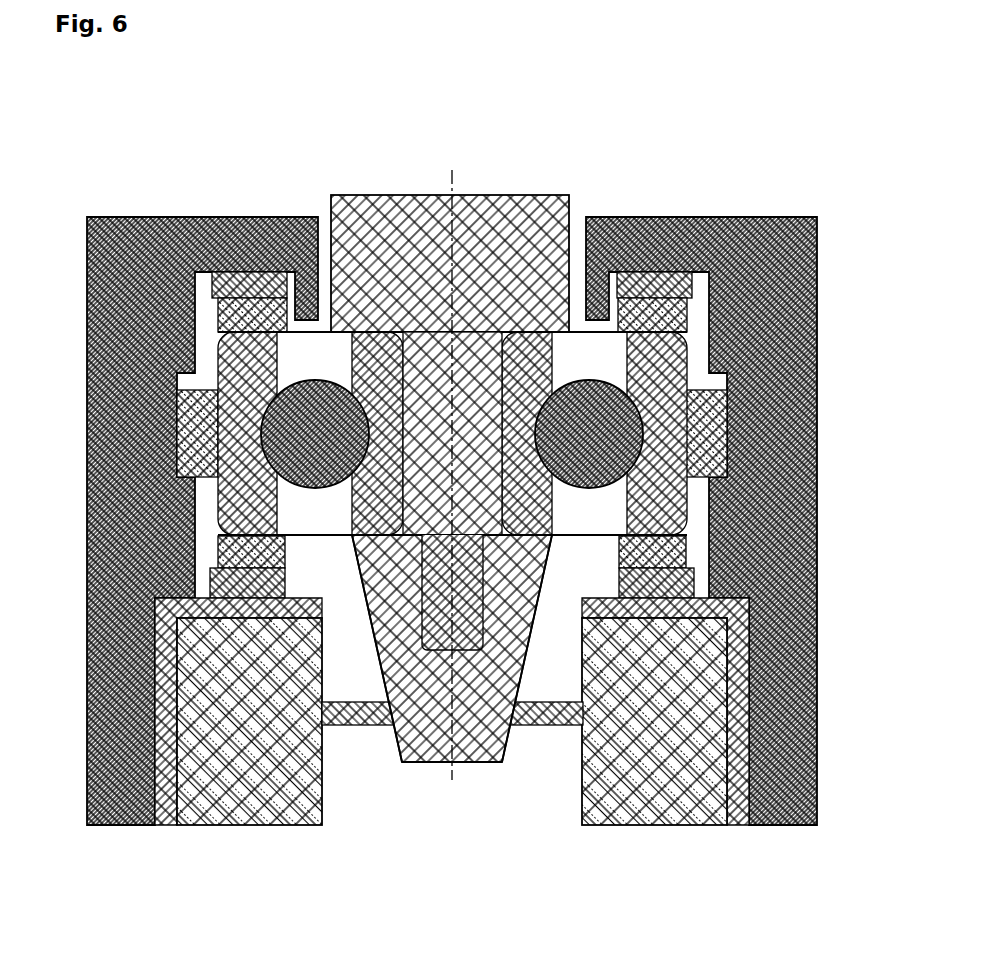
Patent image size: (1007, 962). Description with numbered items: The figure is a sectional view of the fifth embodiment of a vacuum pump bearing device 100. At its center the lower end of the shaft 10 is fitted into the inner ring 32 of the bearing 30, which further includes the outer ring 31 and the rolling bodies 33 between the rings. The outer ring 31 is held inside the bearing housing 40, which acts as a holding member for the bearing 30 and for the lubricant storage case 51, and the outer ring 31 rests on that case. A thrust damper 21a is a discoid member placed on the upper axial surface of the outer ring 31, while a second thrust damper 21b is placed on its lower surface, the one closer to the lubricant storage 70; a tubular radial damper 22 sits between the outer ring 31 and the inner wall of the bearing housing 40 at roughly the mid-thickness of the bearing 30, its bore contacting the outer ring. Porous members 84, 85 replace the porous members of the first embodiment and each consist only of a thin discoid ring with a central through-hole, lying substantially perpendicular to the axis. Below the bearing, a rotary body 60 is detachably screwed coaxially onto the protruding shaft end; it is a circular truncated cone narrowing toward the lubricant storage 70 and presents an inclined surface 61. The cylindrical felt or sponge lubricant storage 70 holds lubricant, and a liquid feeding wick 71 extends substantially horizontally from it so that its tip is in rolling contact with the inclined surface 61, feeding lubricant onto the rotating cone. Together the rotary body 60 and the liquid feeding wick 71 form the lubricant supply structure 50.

The vacuum pump bearing device 100 is at (735, 115).
The shaft 10 is at (513, 238).
The thrust damper 21a is at (247, 280).
The thrust damper 21b is at (672, 548).
The radial damper 22 is at (187, 428).
The bearing 30 is at (354, 364).
The outer ring 31 is at (237, 445).
The inner ring 32 is at (363, 372).
The rolling bodies 33 is at (300, 468).
The bearing housing 40 is at (755, 242).
The lubricant supply structure 50 is at (454, 637).
The lubricant storage case 51 is at (203, 605).
The rotary body 60 is at (452, 637).
The inclined surface 61 is at (380, 665).
The lubricant storage 70 is at (683, 757).
The liquid feeding wick 71 is at (569, 713).
The porous member 84 is at (657, 273).
The porous member 85 is at (660, 582).